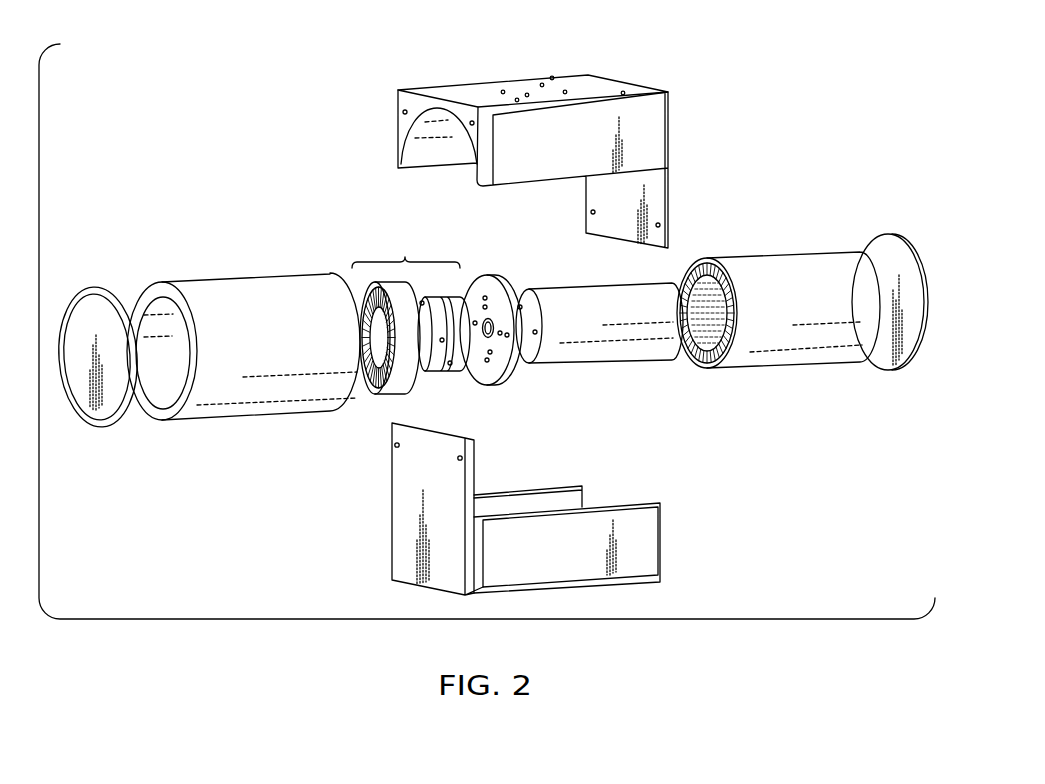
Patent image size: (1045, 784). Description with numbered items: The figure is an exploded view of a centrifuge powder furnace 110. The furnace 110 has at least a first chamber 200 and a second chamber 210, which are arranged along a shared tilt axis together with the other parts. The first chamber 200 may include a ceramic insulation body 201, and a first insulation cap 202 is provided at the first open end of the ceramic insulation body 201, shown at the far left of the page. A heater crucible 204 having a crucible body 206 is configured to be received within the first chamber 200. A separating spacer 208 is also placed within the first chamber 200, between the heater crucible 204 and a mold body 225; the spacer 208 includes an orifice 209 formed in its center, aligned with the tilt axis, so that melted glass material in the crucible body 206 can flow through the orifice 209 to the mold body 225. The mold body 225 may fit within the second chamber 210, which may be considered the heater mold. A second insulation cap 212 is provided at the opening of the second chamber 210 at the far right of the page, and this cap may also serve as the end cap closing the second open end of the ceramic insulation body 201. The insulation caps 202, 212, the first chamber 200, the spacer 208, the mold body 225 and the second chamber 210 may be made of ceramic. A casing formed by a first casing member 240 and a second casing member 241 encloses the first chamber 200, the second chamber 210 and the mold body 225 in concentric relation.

The furnace 110 is at (805, 44).
The first chamber 200 is at (201, 250).
The ceramic insulation body 201 is at (263, 277).
The first insulation cap 202 is at (95, 287).
The heater crucible 204 is at (405, 257).
The crucible body 206 is at (447, 371).
The separating spacer 208 is at (488, 277).
The orifice 209 is at (486, 345).
The second chamber 210 is at (800, 252).
The second insulation cap 212 is at (877, 235).
The mold body 225 is at (606, 362).
The first casing member 240 is at (670, 130).
The second casing member 241 is at (660, 542).